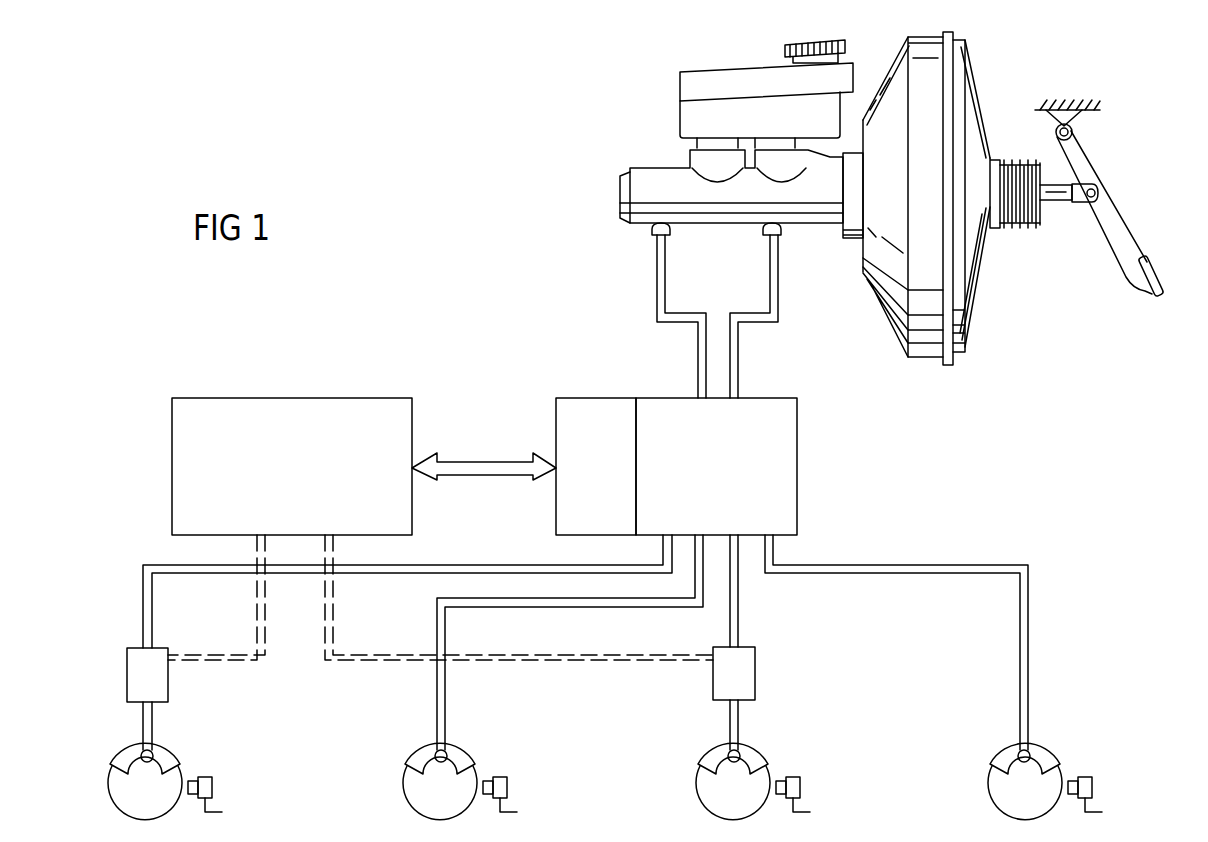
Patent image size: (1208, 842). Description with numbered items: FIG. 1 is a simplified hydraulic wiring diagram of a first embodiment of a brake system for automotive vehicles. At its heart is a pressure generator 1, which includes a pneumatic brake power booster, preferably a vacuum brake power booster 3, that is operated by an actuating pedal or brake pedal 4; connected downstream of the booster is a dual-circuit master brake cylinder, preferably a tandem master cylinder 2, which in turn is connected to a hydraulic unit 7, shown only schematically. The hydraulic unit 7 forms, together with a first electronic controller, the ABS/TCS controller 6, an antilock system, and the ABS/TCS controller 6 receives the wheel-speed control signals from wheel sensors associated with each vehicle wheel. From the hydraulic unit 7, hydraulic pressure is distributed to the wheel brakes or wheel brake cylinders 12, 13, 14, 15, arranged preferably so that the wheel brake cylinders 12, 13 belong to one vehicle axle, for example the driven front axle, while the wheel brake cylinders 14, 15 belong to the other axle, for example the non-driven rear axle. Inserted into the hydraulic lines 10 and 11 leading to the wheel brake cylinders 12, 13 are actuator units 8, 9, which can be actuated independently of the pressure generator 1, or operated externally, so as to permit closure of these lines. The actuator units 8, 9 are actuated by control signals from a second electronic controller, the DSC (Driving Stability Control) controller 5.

The pressure generator 1 is at (1006, 80).
The tandem master cylinder 2 is at (645, 175).
The vacuum brake power booster 3 is at (970, 282).
The brake pedal 4 is at (1118, 253).
The DSC controller 5 is at (274, 410).
The ABS/TCS controller 6 is at (598, 410).
The hydraulic unit 7 is at (776, 410).
The actuator unit 8 is at (133, 673).
The actuator unit 9 is at (743, 677).
The hydraulic line 10 is at (143, 612).
The hydraulic line 11 is at (735, 612).
The wheel brake cylinder 12 is at (152, 757).
The wheel brake cylinder 13 is at (740, 757).
The wheel brake cylinder 14 is at (447, 757).
The wheel brake cylinder 15 is at (1030, 757).